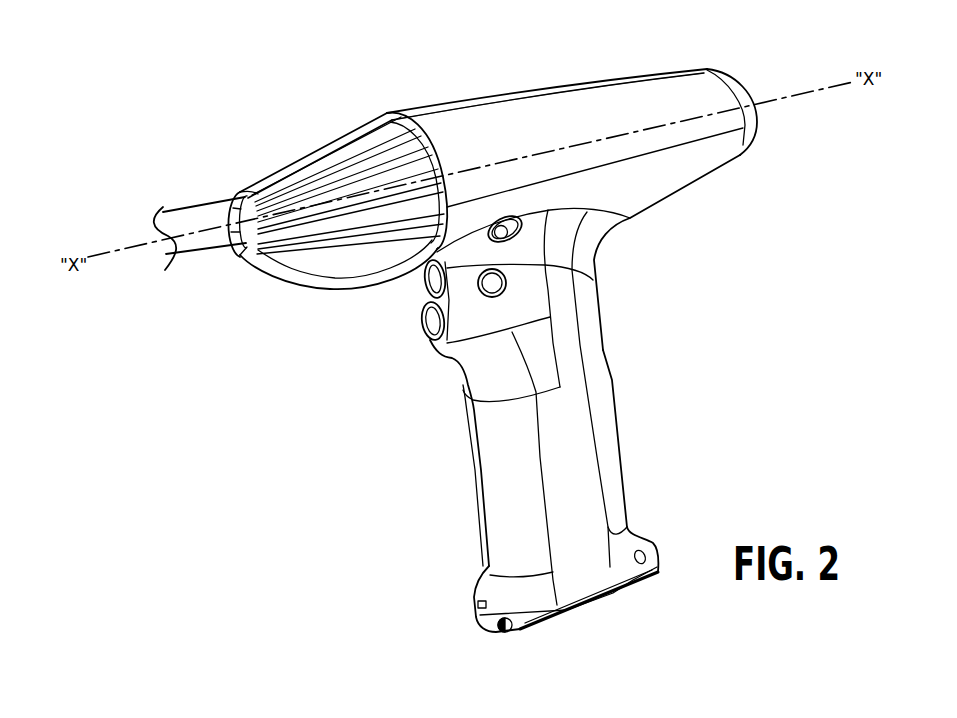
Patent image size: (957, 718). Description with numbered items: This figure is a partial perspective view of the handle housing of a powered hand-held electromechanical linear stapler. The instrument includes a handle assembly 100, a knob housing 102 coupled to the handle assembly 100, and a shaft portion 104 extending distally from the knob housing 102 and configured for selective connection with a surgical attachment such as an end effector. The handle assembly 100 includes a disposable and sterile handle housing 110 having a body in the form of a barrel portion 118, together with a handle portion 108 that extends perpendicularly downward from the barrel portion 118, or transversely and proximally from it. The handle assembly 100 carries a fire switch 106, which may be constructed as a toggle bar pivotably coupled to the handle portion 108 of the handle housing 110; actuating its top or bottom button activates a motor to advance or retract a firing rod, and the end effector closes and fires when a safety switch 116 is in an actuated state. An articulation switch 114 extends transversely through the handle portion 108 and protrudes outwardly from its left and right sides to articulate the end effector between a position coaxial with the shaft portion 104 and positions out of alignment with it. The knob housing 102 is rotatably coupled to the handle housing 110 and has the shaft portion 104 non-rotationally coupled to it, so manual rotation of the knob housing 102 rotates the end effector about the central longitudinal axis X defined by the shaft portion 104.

The handle assembly 100 is at (517, 55).
The knob housing 102 is at (322, 138).
The shaft portion 104 is at (192, 218).
The fire switch 106 is at (418, 308).
The handle portion 108 is at (488, 468).
The handle housing 110 is at (616, 68).
The articulation switch 114 is at (517, 292).
The safety switch 116 is at (528, 232).
The barrel portion 118 is at (544, 105).